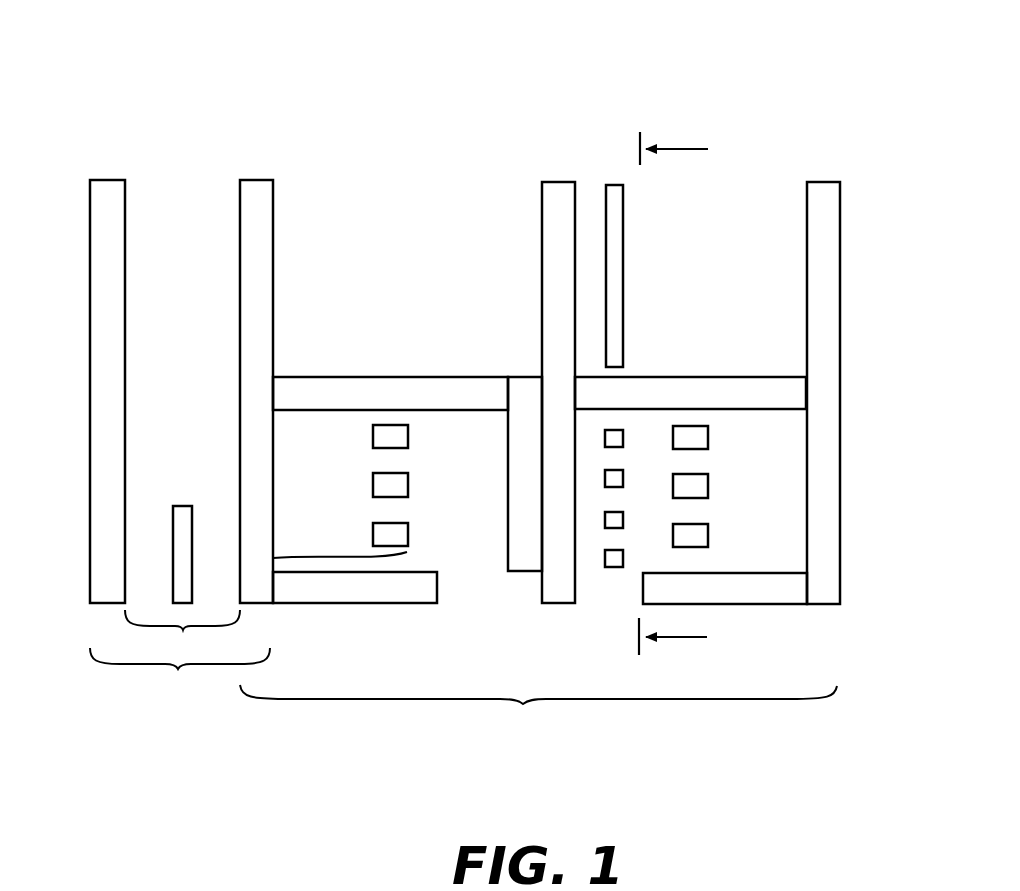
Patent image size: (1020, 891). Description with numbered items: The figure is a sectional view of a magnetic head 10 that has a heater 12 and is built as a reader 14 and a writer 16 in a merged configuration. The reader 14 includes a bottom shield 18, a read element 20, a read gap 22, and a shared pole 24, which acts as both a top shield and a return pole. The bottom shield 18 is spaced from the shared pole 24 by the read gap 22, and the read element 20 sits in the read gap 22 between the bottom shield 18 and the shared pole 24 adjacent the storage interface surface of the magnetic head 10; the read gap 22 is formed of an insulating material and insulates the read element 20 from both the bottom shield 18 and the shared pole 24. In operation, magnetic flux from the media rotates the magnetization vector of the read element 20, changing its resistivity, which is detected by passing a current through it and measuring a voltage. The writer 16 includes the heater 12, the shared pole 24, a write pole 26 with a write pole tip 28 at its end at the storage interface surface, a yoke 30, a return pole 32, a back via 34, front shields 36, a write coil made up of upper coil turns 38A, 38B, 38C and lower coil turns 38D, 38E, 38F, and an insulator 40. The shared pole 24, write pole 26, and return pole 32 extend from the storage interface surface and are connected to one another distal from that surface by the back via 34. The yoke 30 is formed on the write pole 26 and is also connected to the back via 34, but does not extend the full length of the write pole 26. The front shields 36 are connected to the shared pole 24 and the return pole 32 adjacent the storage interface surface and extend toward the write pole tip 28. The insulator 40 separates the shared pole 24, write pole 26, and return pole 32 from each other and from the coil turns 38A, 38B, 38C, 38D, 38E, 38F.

The magnetic head 10 is at (100, 123).
The heater 12 is at (623, 290).
The reader 14 is at (143, 441).
The writer 16 is at (579, 428).
The bottom shield 18 is at (90, 437).
The read element 20 is at (176, 506).
The read gap 22 is at (182, 634).
The shared pole 24 is at (362, 555).
The write pole 26 is at (542, 302).
The write pole tip 28 is at (571, 612).
The yoke 30 is at (508, 573).
The return pole 32 is at (840, 452).
The back via 34 is at (385, 376).
The front shields 36 is at (378, 605).
The upper coil turn 38A is at (708, 536).
The upper coil turn 38B is at (708, 487).
The upper coil turn 38C is at (708, 438).
The lower coil turn 38D is at (373, 533).
The lower coil turn 38E is at (373, 483).
The lower coil turn 38F is at (373, 434).
The insulator 40 is at (590, 576).